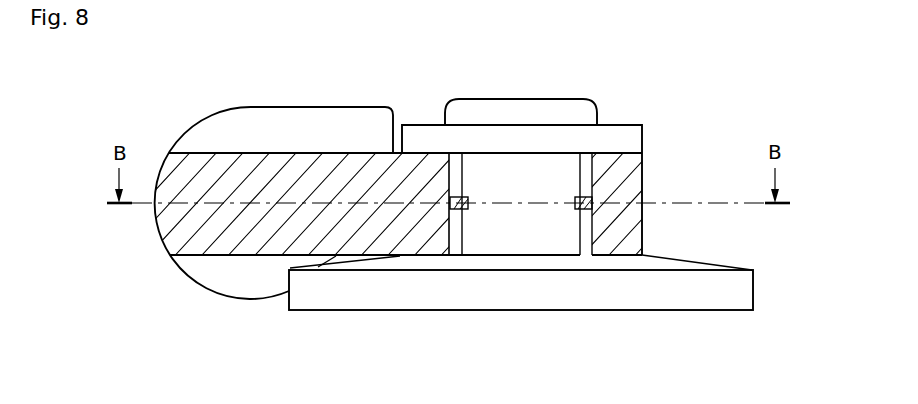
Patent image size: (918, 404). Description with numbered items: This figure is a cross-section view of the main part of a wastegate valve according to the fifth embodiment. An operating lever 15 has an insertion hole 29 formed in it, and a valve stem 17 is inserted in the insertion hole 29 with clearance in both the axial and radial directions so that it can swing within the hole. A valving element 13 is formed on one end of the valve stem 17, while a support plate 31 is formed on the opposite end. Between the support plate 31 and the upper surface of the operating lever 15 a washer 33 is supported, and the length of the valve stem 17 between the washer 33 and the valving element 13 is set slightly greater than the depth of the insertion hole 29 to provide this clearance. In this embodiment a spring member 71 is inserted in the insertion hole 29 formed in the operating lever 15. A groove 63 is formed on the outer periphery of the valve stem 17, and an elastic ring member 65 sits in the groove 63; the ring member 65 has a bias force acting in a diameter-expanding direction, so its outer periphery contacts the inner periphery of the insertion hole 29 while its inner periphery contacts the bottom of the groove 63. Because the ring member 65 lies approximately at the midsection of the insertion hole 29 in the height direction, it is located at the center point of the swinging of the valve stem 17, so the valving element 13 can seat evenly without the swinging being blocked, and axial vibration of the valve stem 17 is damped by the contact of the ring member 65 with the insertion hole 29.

The valving element 13 is at (753, 291).
The operating lever 15 is at (233, 237).
The valve stem 17 is at (533, 233).
The insertion hole 29 is at (455, 230).
The support plate 31 is at (583, 100).
The washer 33 is at (642, 140).
The groove 63 is at (576, 199).
The ring member 65 is at (460, 197).
The spring member 71 is at (617, 189).